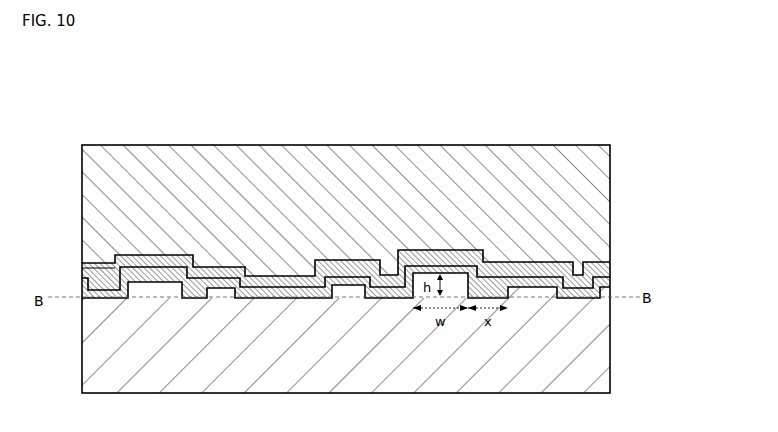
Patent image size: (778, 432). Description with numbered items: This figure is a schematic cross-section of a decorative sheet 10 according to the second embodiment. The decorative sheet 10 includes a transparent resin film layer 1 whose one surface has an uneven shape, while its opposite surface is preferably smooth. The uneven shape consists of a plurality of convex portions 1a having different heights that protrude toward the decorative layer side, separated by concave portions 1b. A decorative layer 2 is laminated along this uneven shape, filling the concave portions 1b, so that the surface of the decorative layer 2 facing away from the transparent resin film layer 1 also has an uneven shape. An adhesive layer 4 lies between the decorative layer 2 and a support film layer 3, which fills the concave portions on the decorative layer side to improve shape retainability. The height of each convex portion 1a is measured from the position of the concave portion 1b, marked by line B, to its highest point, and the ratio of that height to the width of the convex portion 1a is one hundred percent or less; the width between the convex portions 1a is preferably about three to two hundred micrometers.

The decorative sheet 10 is at (565, 130).
The transparent resin film layer 1 is at (611, 348).
The convex portions 1a is at (455, 296).
The concave portions 1b is at (491, 296).
The decorative layer 2 is at (611, 284).
The support film layer 3 is at (611, 223).
The adhesive layer 4 is at (611, 270).